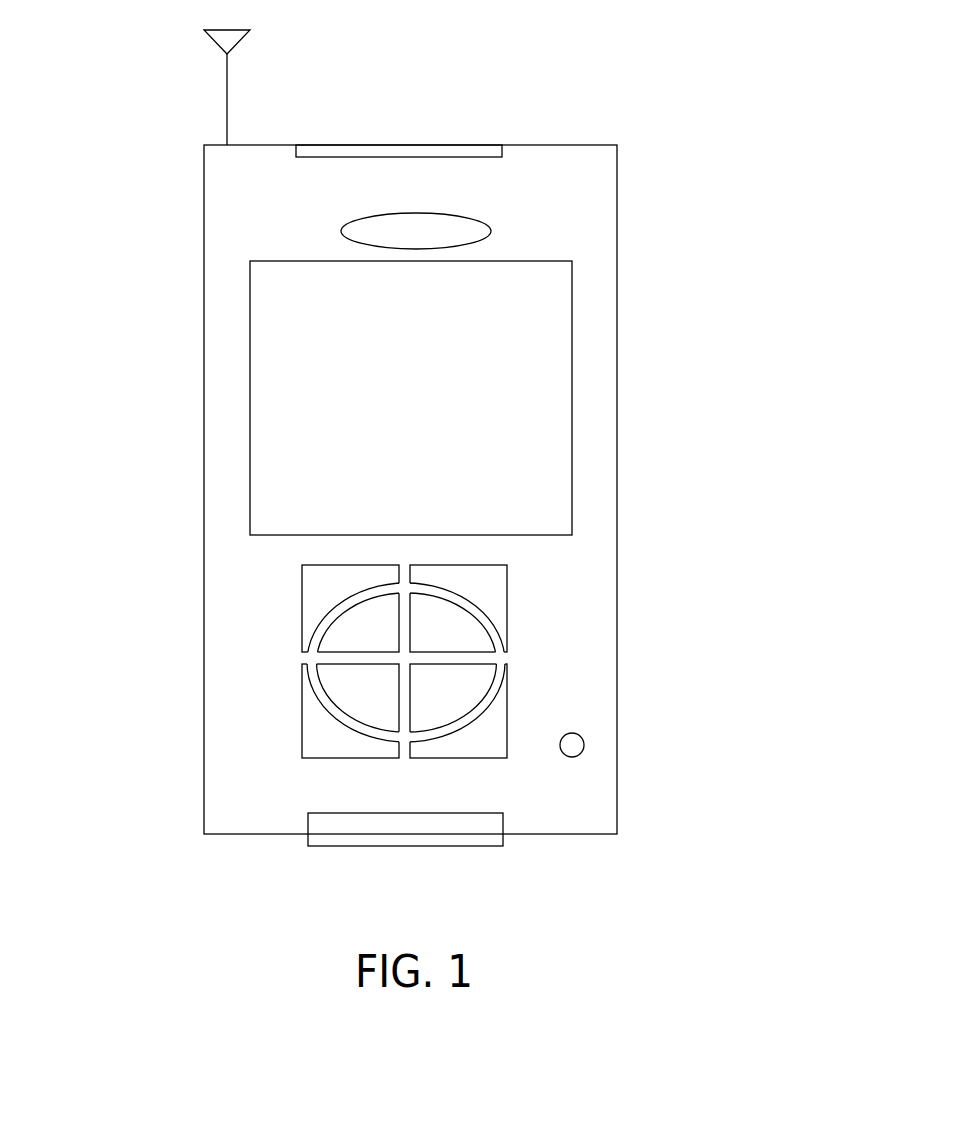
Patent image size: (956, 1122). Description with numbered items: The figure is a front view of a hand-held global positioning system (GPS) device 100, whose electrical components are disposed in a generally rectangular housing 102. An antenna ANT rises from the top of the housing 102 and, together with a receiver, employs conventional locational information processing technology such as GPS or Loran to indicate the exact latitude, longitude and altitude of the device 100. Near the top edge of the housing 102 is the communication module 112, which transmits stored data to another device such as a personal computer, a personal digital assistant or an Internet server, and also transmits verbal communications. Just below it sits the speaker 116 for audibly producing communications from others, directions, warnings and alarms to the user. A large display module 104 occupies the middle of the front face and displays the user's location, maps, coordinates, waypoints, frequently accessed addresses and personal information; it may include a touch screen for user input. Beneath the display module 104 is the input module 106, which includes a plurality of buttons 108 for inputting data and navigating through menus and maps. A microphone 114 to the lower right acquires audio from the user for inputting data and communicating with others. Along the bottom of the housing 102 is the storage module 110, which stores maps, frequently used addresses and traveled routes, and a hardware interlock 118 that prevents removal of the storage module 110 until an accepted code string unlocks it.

The GPS device 100 is at (748, 258).
The housing 102 is at (204, 192).
The display module 104 is at (572, 363).
The input module 106 is at (401, 661).
The buttons 108 is at (365, 627).
The storage module 110 is at (308, 823).
The communication module 112 is at (443, 145).
The microphone 114 is at (580, 735).
The speaker 116 is at (417, 213).
The hardware interlock 118 is at (360, 850).
The antenna ANT is at (227, 75).